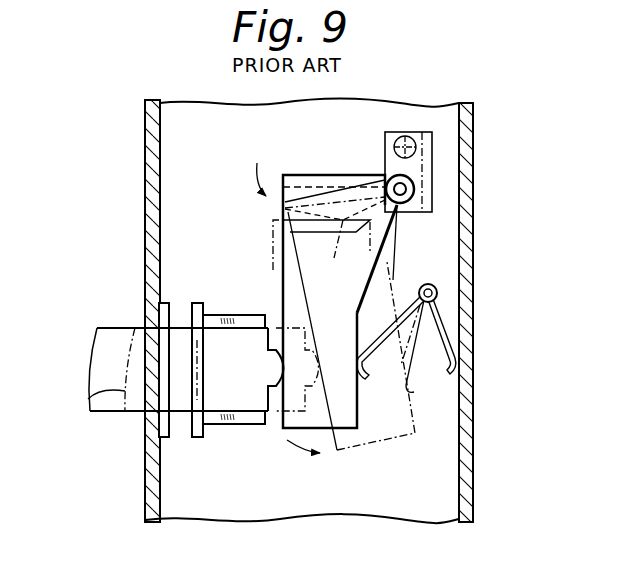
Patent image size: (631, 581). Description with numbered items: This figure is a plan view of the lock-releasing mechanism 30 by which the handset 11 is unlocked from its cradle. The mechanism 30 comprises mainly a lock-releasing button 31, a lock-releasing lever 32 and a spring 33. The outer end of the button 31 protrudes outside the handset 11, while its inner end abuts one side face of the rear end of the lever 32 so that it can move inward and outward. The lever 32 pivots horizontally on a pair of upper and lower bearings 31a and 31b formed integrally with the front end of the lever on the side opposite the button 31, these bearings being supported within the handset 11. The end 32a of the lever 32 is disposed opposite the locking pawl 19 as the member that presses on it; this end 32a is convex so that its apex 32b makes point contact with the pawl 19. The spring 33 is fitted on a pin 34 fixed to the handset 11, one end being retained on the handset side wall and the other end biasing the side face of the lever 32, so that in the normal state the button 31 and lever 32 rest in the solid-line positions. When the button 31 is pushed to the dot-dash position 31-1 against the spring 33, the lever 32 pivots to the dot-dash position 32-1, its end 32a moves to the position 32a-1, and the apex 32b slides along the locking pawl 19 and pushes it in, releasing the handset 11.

The handset 11 is at (144, 116).
The lock-releasing mechanism 30 is at (186, 240).
The lock-releasing button 31 is at (97, 344).
The pushed position of lock-releasing button 31-1 is at (88, 399).
The upper bearing 31a is at (414, 188).
The lower bearing 31b is at (488, 189).
The locking pawl 19 is at (388, 228).
The lock-releasing lever 32 is at (273, 428).
The end of lock-releasing lever 32a is at (283, 211).
The pivoted position of lever end 32a-1 is at (273, 266).
The apex 32b is at (360, 236).
The pivoted position of lock-releasing lever 32-1 is at (378, 450).
The spring 33 is at (447, 323).
The pin 34 is at (437, 294).